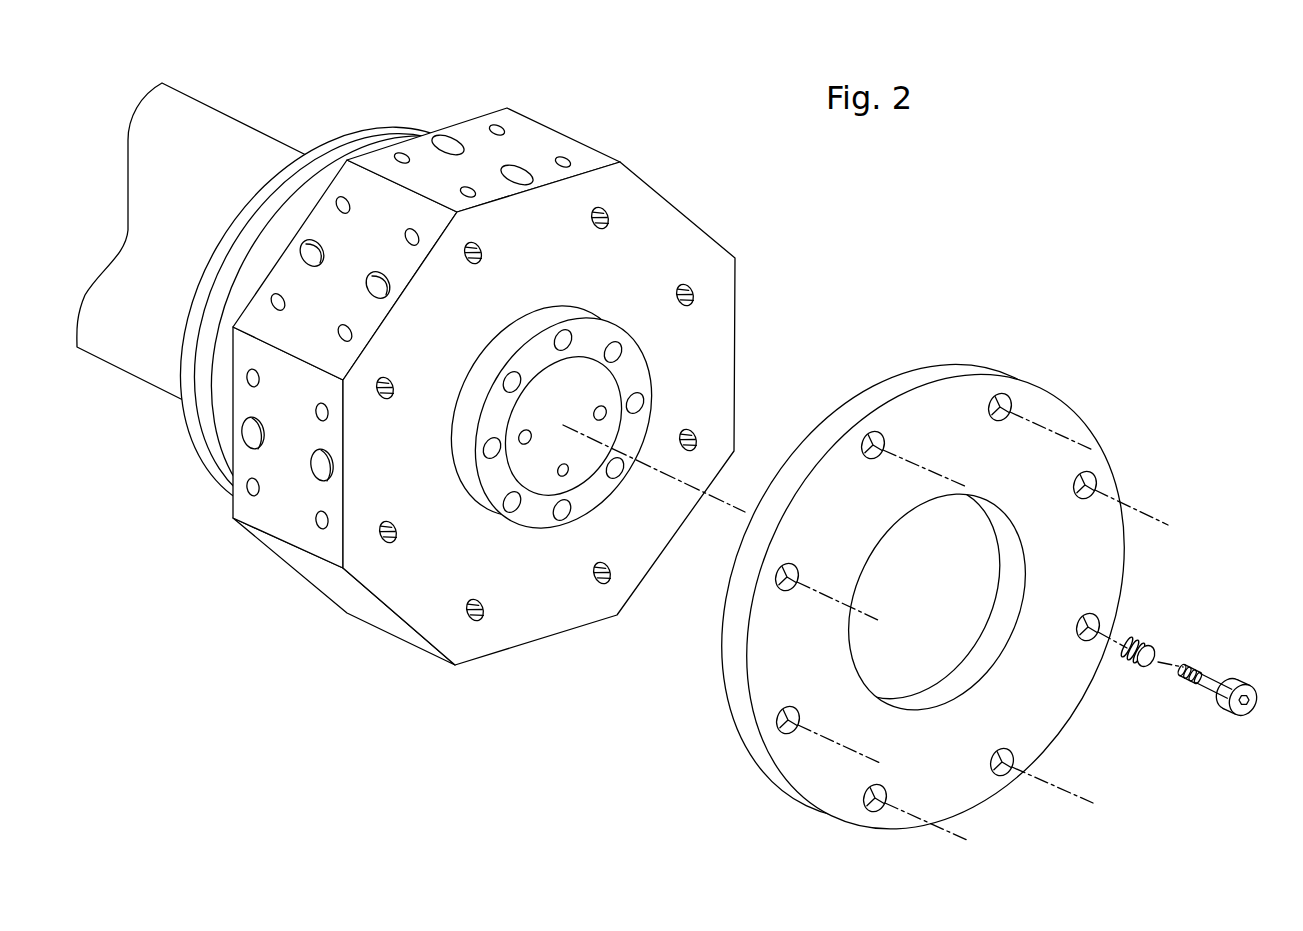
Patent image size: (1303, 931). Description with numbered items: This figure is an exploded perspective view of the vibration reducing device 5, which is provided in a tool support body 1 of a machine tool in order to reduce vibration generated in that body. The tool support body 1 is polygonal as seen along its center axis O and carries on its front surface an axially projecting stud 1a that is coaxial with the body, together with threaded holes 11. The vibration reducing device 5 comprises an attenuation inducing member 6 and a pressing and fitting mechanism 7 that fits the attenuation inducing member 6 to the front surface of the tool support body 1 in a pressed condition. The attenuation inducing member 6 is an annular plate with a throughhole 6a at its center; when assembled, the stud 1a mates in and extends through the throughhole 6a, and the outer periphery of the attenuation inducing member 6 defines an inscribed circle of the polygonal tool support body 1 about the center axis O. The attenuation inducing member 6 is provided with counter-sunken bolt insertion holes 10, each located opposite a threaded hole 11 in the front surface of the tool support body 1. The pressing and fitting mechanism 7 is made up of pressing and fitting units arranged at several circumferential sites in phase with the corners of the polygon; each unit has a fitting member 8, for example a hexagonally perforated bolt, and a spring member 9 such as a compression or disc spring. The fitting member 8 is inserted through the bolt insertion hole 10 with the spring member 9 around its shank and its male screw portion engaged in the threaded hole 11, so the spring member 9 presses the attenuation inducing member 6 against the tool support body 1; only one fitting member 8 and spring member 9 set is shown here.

The tool support body 1 is at (283, 508).
The stud 1a is at (537, 516).
The threaded hole 11 is at (690, 284).
The center axis O is at (728, 508).
The vibration reducing device 5 is at (958, 569).
The attenuation inducing member 6 is at (910, 569).
The throughhole 6a is at (893, 676).
The bolt insertion hole 10 is at (1091, 478).
The pressing and fitting mechanism 7 is at (1192, 524).
The fitting member 8 is at (1218, 678).
The spring member 9 is at (1147, 643).